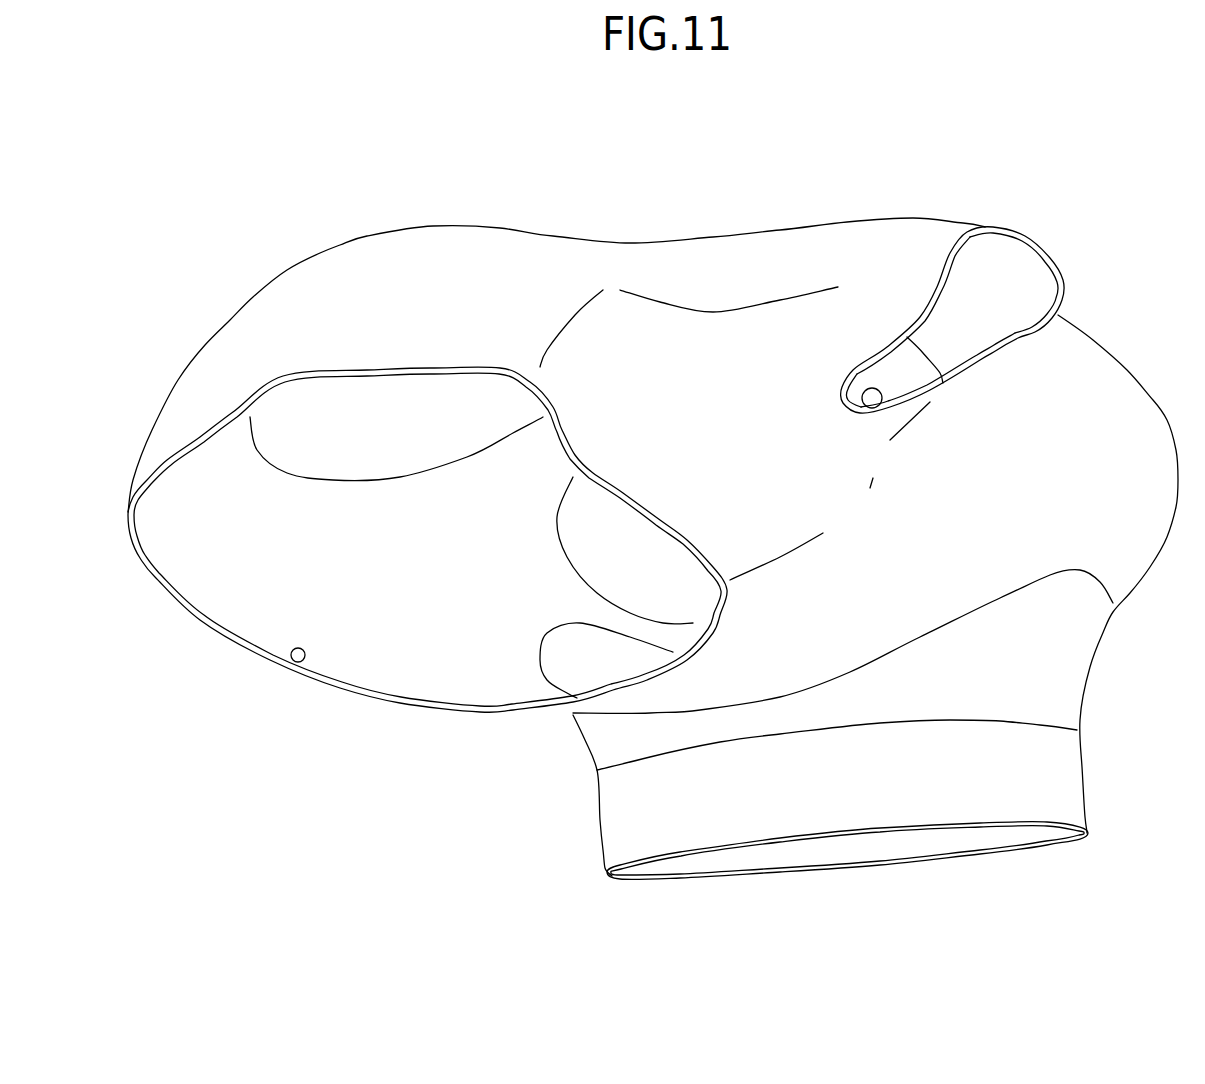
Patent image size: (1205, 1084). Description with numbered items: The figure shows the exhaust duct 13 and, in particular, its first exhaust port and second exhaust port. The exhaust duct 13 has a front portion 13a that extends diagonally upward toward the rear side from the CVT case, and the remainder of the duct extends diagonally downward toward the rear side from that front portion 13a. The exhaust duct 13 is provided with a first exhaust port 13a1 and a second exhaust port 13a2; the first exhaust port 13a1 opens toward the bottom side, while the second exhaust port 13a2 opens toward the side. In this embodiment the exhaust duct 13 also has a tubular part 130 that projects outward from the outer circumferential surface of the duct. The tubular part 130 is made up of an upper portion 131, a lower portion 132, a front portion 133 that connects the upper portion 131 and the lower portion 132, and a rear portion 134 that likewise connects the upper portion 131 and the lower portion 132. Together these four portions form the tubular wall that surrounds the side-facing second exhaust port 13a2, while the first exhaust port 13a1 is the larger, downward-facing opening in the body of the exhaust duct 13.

The exhaust duct 13 is at (653, 502).
The front portion 13a is at (555, 236).
The first exhaust port 13a1 is at (298, 662).
The second exhaust port 13a2 is at (874, 408).
The tubular part 130 is at (943, 306).
The upper portion 131 is at (1045, 252).
The lower portion 132 is at (838, 395).
The front portion 133 is at (980, 373).
The rear portion 134 is at (926, 303).